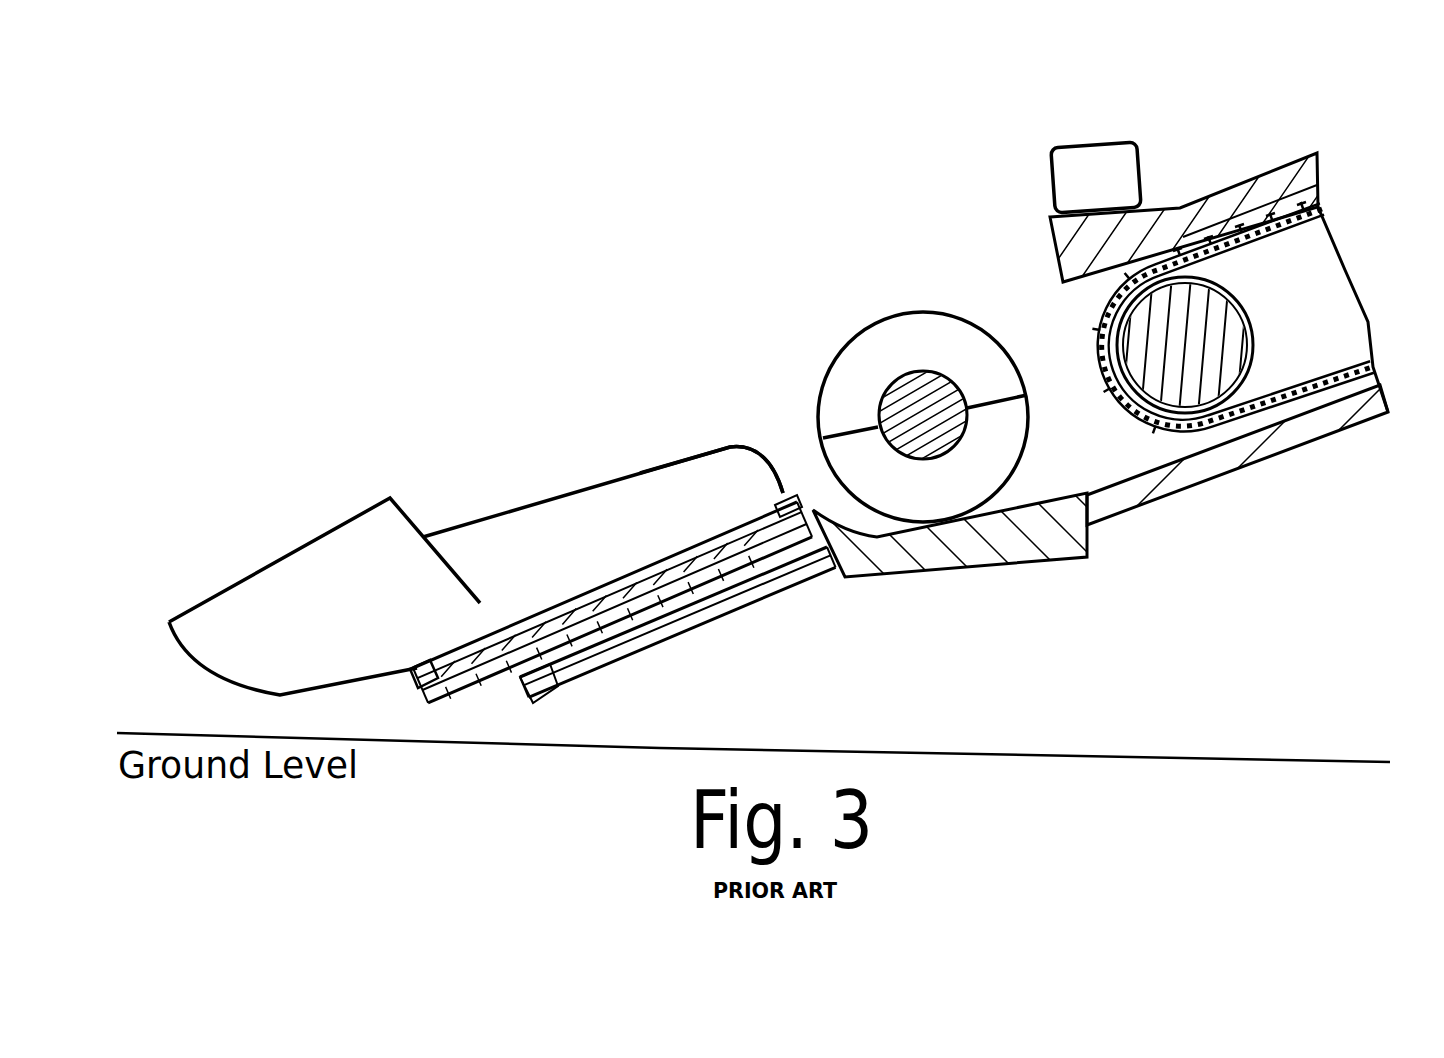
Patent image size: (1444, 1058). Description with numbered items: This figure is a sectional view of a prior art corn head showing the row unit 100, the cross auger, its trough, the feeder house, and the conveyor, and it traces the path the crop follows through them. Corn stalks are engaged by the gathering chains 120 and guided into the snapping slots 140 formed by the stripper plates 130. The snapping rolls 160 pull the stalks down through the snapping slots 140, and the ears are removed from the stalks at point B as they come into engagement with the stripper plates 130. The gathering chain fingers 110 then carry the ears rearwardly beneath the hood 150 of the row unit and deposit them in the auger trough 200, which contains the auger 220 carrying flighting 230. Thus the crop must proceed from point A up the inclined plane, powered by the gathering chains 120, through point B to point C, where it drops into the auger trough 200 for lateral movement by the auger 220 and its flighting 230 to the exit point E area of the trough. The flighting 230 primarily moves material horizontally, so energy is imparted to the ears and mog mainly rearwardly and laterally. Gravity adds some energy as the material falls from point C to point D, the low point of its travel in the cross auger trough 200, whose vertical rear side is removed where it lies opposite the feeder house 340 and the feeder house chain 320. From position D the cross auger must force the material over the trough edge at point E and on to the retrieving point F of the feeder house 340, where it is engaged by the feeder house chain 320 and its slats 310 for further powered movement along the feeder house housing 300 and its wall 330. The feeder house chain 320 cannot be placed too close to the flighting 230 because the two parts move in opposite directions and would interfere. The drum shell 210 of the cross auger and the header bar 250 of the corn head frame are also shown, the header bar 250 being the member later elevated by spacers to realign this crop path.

The loading bucket 100 is at (334, 628).
The gathering chain fingers 110 is at (414, 683).
The gathering chains 120 is at (483, 707).
The stripper plates 130 is at (562, 640).
The snapping slots 140 is at (625, 545).
The hopper hood 150 is at (693, 513).
The snapping rolls 160 is at (737, 580).
The auger trough 200 is at (868, 548).
The drum shell 210 is at (847, 435).
The auger 220 is at (920, 413).
The flighting 230 is at (990, 378).
The header bar 250 is at (1108, 190).
The rotor 300 is at (1183, 323).
The slats 310 is at (1247, 217).
The feeder house chain 320 is at (1317, 207).
The housing 330 is at (1337, 276).
The feeder house 340 is at (1335, 403).
The point A is at (478, 731).
The point B is at (657, 570).
The point C is at (815, 520).
The point D is at (938, 533).
The point E is at (1087, 495).
The point F is at (1192, 457).